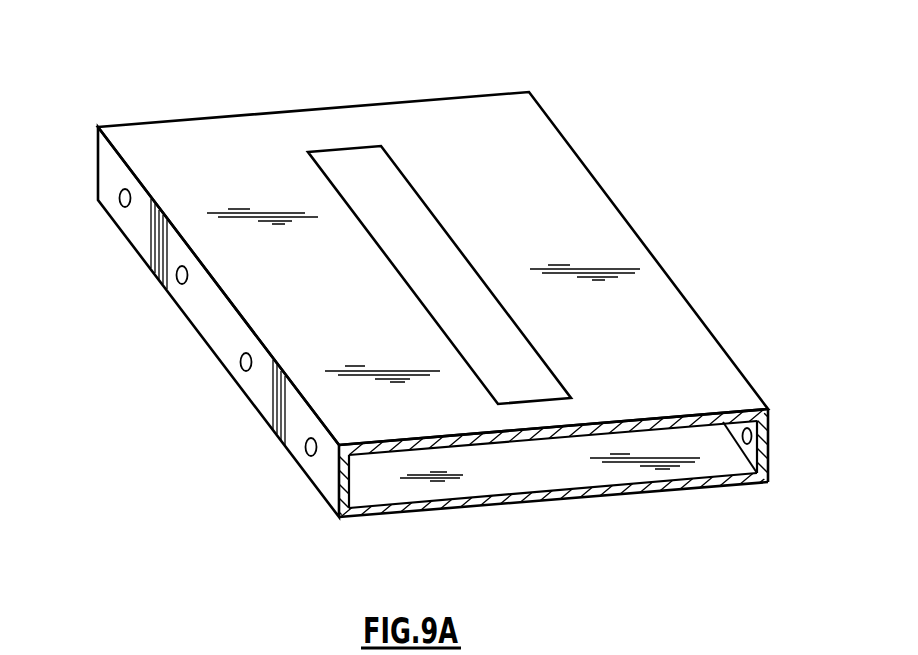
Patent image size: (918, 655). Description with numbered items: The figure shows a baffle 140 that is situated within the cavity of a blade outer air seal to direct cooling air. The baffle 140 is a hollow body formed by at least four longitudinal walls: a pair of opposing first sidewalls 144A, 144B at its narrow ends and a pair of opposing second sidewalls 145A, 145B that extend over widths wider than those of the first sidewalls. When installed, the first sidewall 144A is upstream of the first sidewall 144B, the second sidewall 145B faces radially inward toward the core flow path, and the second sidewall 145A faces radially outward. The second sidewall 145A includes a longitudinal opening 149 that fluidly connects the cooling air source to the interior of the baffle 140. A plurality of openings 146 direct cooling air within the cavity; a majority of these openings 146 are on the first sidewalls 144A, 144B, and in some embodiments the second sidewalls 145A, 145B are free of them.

The baffle 140 is at (112, 80).
The first sidewall 144A is at (340, 484).
The first sidewall 144B is at (769, 447).
The second sidewall 145A is at (457, 441).
The second sidewall 145B is at (478, 503).
The openings 146 is at (181, 284).
The longitudinal opening 149 is at (374, 241).